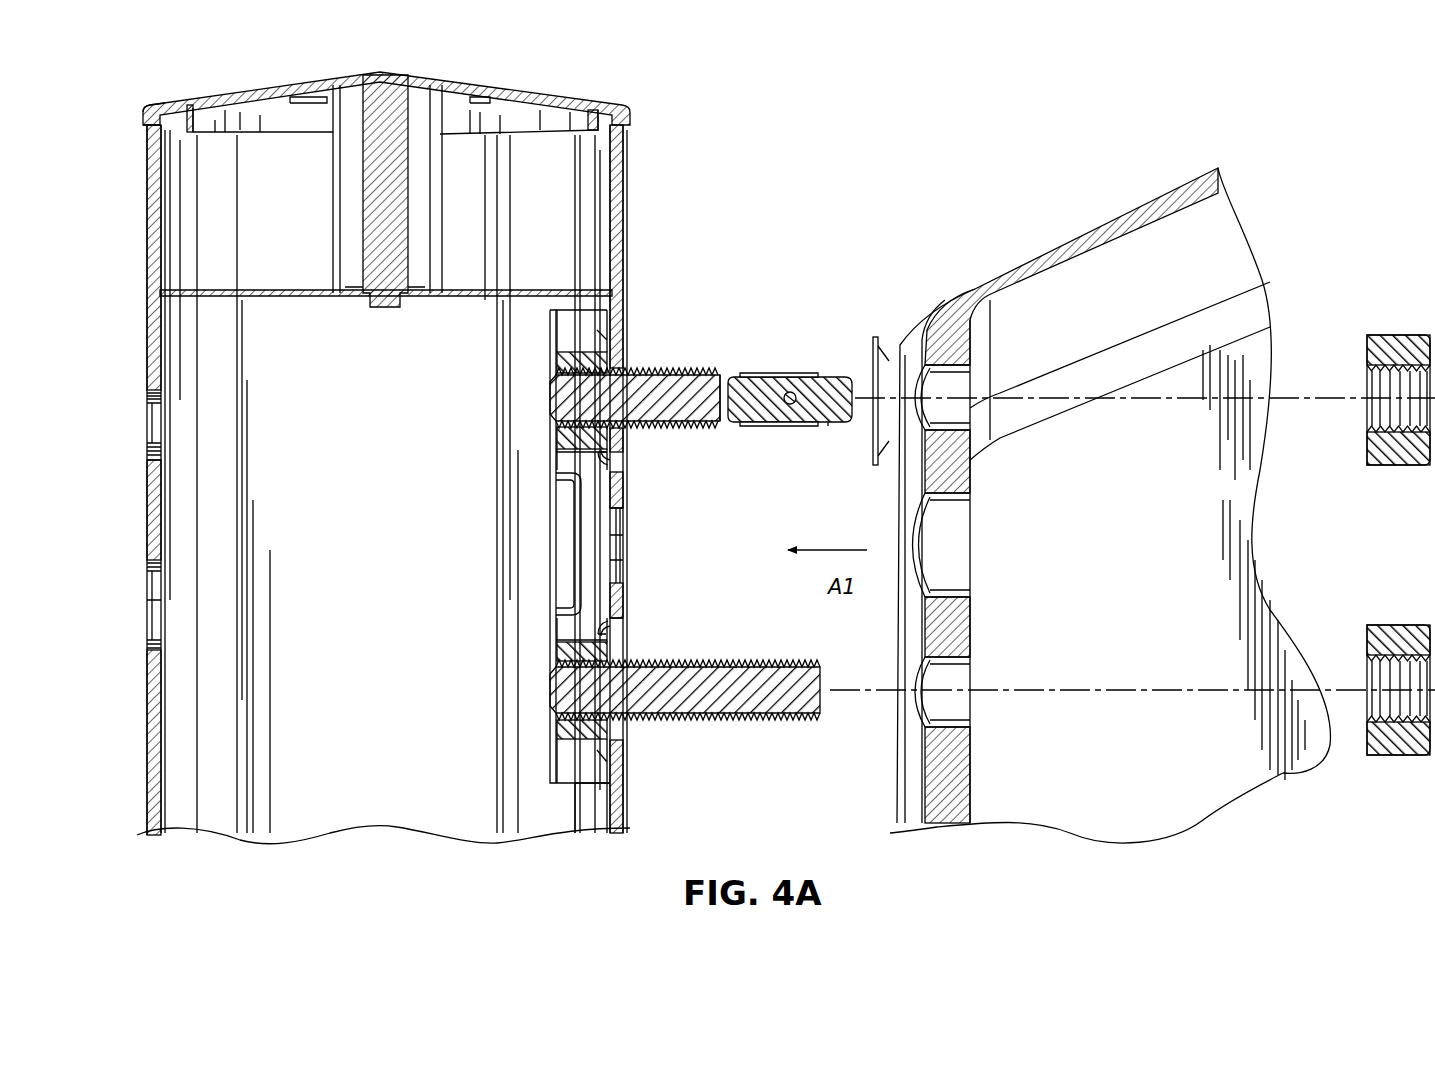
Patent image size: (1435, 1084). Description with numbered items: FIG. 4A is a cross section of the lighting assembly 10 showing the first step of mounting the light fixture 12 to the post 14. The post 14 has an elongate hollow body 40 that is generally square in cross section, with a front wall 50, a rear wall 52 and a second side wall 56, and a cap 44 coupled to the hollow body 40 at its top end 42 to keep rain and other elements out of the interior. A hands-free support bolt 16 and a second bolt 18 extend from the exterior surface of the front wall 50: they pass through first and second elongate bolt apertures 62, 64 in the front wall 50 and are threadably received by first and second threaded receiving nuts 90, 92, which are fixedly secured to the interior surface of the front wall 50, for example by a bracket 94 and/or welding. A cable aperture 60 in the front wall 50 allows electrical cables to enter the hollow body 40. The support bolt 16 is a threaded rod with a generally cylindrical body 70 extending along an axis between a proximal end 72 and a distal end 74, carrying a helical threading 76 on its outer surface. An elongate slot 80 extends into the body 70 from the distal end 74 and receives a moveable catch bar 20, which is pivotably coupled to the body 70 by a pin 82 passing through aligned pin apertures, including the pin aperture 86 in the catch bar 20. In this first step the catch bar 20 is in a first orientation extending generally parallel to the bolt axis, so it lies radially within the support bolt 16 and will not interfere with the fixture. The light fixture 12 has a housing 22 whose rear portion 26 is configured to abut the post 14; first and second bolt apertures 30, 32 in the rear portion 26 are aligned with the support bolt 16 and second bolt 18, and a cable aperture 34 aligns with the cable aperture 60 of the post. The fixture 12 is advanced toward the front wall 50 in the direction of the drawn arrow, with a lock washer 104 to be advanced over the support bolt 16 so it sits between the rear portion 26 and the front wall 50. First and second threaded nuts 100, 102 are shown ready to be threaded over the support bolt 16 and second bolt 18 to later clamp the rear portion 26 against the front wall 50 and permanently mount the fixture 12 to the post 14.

The lighting assembly 10 is at (944, 76).
The light fixture 12 is at (1107, 489).
The post 14 is at (126, 181).
The support bolt 16 is at (642, 383).
The second bolt 18 is at (754, 724).
The catch bar 20 is at (792, 404).
The housing 22 is at (1079, 233).
The rear portion 26 is at (912, 344).
The first bolt aperture 30 is at (962, 380).
The second bolt aperture 32 is at (965, 672).
The cable aperture 34 is at (955, 553).
The hollow body 40 is at (146, 254).
The top end 42 is at (153, 122).
The cap 44 is at (237, 95).
The front wall 50 is at (624, 212).
The rear wall 52 is at (147, 712).
The second side wall 56 is at (400, 581).
The cable aperture 60 is at (620, 547).
The first elongate bolt aperture 62 is at (613, 468).
The second elongate bolt aperture 64 is at (618, 640).
The body 70 is at (663, 418).
The proximal end 72 is at (550, 395).
The distal end 74 is at (830, 426).
The helical threading 76 is at (706, 375).
The elongate slot 80 is at (718, 429).
The pin 82 is at (790, 391).
The pin aperture 86 is at (789, 406).
The first threaded receiving nut 90 is at (555, 363).
The second threaded receiving nut 92 is at (555, 652).
The bracket 94 is at (553, 747).
The first threaded nut 100 is at (1398, 466).
The second threaded nut 102 is at (1398, 756).
The lock washer 104 is at (876, 468).